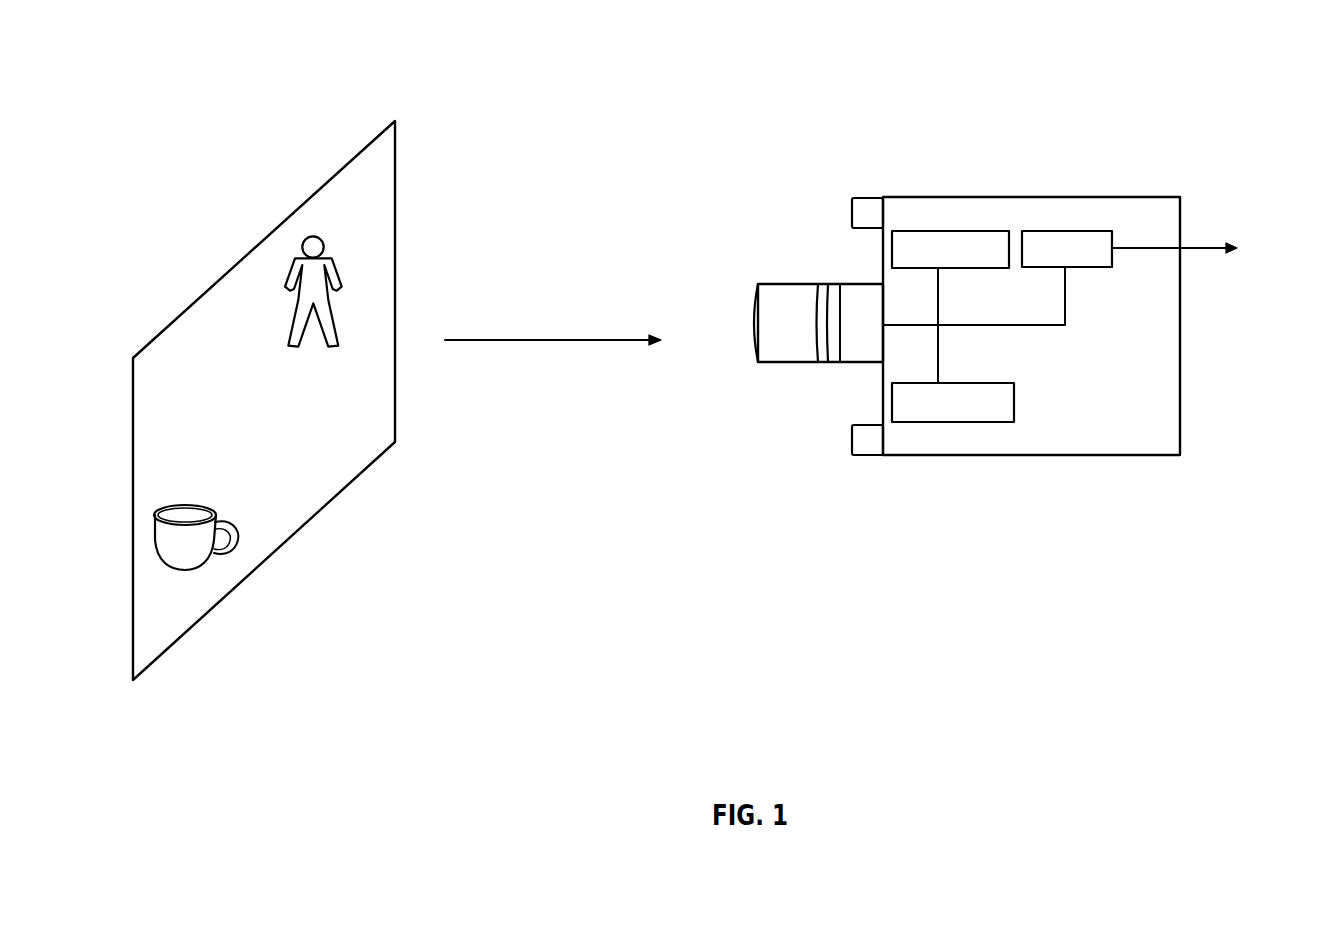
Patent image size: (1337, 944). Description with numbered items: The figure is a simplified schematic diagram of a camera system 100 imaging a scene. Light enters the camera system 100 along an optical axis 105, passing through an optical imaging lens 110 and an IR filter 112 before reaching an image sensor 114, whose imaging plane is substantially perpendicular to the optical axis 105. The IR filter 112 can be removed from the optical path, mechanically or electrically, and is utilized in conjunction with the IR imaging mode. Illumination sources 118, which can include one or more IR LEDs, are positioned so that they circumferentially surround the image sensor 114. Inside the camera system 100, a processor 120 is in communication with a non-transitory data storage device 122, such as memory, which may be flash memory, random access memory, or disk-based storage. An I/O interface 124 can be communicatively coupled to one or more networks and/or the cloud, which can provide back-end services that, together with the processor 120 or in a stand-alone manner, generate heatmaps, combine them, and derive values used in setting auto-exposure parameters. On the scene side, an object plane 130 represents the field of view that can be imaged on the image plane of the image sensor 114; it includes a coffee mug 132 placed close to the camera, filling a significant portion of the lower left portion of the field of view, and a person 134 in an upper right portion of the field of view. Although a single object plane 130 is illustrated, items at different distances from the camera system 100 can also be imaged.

The camera system 100 is at (938, 455).
The optical axis 105 is at (553, 327).
The optical imaging lens 110 is at (790, 284).
The IR filter 112 is at (820, 362).
The image sensor 114 is at (870, 362).
The illumination sources 118 is at (865, 196).
The processor 120 is at (957, 230).
The non-transitory data storage device 122 is at (955, 422).
The I/O interface 124 is at (1086, 230).
The object plane 130 is at (328, 178).
The coffee mug 132 is at (172, 500).
The person 134 is at (265, 311).